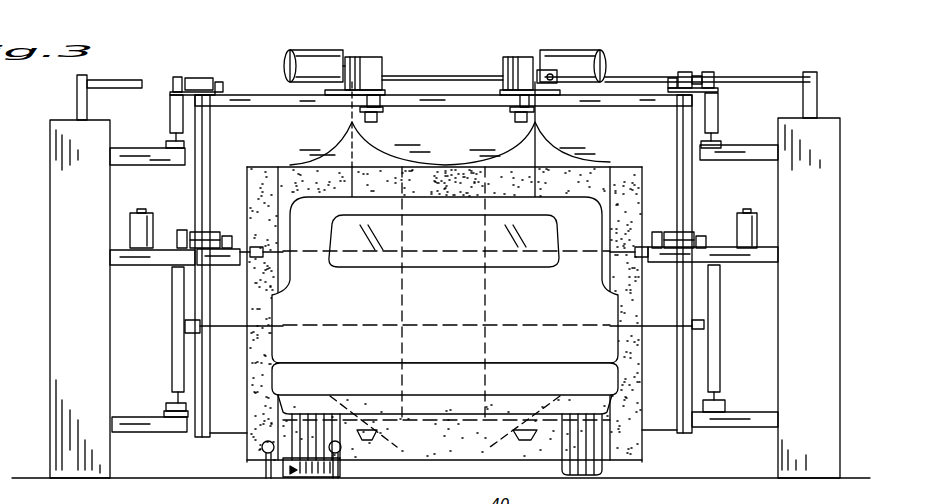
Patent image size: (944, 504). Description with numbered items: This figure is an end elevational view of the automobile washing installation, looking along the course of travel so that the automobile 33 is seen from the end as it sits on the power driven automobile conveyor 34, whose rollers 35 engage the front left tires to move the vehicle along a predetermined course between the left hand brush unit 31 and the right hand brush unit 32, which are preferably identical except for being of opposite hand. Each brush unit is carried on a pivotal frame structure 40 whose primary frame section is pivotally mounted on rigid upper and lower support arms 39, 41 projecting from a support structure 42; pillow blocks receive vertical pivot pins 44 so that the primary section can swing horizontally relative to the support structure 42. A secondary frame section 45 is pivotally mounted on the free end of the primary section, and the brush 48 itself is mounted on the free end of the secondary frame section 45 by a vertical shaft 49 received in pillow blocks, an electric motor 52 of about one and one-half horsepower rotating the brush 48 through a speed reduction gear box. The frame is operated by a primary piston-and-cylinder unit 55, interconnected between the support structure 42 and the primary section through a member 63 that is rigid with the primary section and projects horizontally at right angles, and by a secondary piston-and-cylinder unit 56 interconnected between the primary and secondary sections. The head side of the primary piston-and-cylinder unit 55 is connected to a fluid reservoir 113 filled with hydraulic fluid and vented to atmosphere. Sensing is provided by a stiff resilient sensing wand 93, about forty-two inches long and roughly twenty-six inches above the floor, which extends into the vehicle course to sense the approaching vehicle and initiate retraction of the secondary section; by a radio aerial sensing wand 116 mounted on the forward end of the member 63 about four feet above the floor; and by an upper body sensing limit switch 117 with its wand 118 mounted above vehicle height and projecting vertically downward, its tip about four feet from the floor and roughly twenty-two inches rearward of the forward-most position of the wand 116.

The left hand brush unit 31 is at (261, 54).
The right hand brush unit 32 is at (633, 60).
The automobile 33 is at (460, 320).
The automobile conveyor 34 is at (264, 456).
The rollers 35 is at (292, 479).
The upper support arm 39 is at (143, 149).
The pivotal frame structure 40 is at (286, 113).
The lower support arm 41 is at (132, 434).
The support structure 42 is at (66, 279).
The vertical pivot pins 44 is at (171, 125).
The secondary frame section 45 is at (258, 96).
The brush 48 is at (266, 212).
The vertical shaft 49 is at (384, 111).
The electric motor 52 is at (314, 52).
The primary piston-and-cylinder unit 55 is at (213, 230).
The secondary piston-and-cylinder unit 56 is at (196, 78).
The member 63 is at (222, 262).
The sensing wand 93 is at (572, 322).
The fluid reservoir 113 is at (135, 216).
The wand 116 is at (485, 245).
The limit switch 117 is at (368, 58).
The wand 118 is at (356, 151).